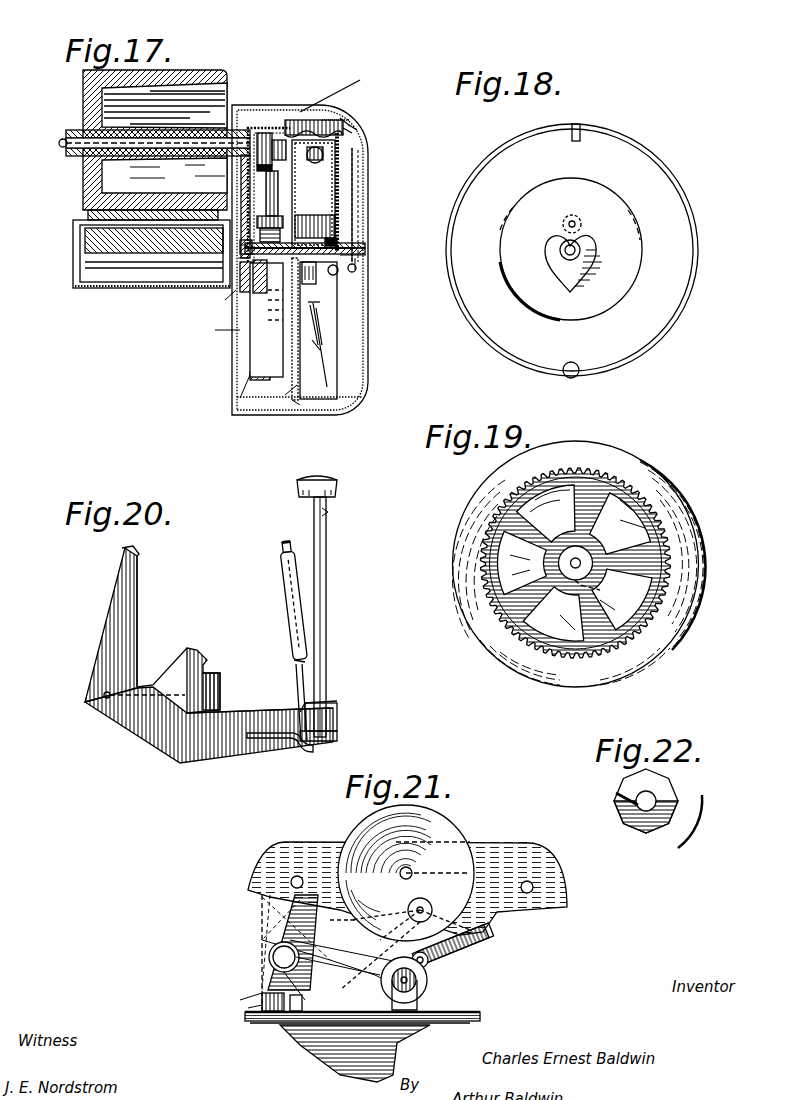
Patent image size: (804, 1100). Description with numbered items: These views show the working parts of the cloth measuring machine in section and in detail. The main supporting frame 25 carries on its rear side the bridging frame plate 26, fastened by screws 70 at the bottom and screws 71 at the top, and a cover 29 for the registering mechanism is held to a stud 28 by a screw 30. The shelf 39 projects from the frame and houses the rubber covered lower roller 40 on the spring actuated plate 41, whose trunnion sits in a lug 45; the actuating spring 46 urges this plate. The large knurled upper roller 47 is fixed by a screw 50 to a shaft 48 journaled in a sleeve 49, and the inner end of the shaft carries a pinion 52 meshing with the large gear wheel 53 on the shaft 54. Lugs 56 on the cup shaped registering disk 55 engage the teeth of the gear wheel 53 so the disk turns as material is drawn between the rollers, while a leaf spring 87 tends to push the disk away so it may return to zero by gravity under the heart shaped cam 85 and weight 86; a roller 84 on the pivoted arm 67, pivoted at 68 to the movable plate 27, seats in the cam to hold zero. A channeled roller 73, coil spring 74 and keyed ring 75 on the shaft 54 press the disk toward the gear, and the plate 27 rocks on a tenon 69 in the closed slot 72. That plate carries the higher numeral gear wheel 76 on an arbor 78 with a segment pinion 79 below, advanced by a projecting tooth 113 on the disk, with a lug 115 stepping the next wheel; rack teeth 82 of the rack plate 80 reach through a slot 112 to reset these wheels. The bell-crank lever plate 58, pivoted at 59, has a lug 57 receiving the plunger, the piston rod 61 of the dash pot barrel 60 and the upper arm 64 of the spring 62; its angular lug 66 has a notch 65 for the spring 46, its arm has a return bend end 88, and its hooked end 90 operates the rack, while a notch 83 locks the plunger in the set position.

In FIG. 17, the main supporting frame 25 is at (232, 373).
In FIG. 21, the main supporting frame 25 is at (567, 886).
In FIG. 17, the frame plate 26 is at (337, 343).
In FIG. 17, the movable frame plate 27 is at (282, 400).
In FIG. 17, the stud 28 is at (358, 278).
In FIG. 17, the cover 29 is at (368, 375).
In FIG. 17, the screw 30 is at (366, 268).
In FIG. 17, the shelf 39 is at (98, 290).
In FIG. 21, the shelf 39 is at (480, 1016).
In FIG. 17, the lower roller 40 is at (88, 215).
In FIG. 21, the lower roller 40 is at (427, 985).
In FIG. 17, the spring actuated plate 41 is at (75, 268).
In FIG. 20, the spring actuated plate 41 is at (140, 685).
In FIG. 21, the spring actuated plate 41 is at (262, 1000).
In FIG. 21, the lug 45 is at (262, 1005).
In FIG. 17, the actuating spring 46 is at (316, 192).
In FIG. 21, the actuating spring 46 is at (270, 957).
In FIG. 17, the large upper roller 47 is at (83, 175).
In FIG. 21, the large upper roller 47 is at (455, 830).
In FIG. 17, the shaft 48 is at (210, 150).
In FIG. 17, the journal sleeve 49 is at (175, 150).
In FIG. 17, the screw 50 is at (70, 140).
In FIG. 17, the pinion 52 is at (251, 128).
In FIG. 20, the pinion 52 is at (326, 600).
In FIG. 17, the large gear wheel 53 is at (225, 288).
In FIG. 19, the large gear wheel 53 is at (515, 495).
In FIG. 17, the shaft 54 is at (355, 249).
In FIG. 19, the shaft 54 is at (580, 566).
In FIG. 17, the registering disk 55 is at (300, 120).
In FIG. 18, the registering disk 55 is at (696, 340).
In FIG. 18, the lugs 56 is at (571, 178).
In FIG. 19, the lugs 56 is at (575, 470).
In FIG. 20, the lug 57 is at (337, 740).
In FIG. 17, the bell-crank lever plate 58 is at (337, 318).
In FIG. 20, the bell-crank lever plate 58 is at (172, 755).
In FIG. 21, the bell-crank lever plate 58 is at (292, 922).
In FIG. 20, the pivot 59 is at (105, 698).
In FIG. 20, the dash pot barrel 60 is at (284, 600).
In FIG. 20, the piston rod 61 is at (298, 688).
In FIG. 17, the spring 62 is at (314, 344).
In FIG. 20, the upper arm 64 is at (295, 752).
In FIG. 20, the notch 65 is at (202, 660).
In FIG. 21, the notch 65 is at (311, 942).
In FIG. 20, the angular lug 66 is at (218, 675).
In FIG. 17, the pivotally mounted arm 67 is at (288, 185).
In FIG. 21, the pivot 68 is at (490, 935).
In FIG. 17, the tenon 69 is at (295, 405).
In FIG. 17, the screws 70 is at (246, 415).
In FIG. 21, the screws 71 is at (302, 886).
In FIG. 17, the closed slot 72 is at (296, 415).
In FIG. 17, the channeled roller 73 is at (312, 268).
In FIG. 17, the coil spring 74 is at (336, 276).
In FIG. 17, the keyed ring 75 is at (355, 244).
In FIG. 17, the higher numeral gear wheel 76 is at (350, 120).
In FIG. 17, the arbors 78 is at (313, 194).
In FIG. 17, the segment pinions 79 is at (352, 160).
In FIG. 17, the toothed rack plate 80 is at (348, 152).
In FIG. 17, the rack teeth 82 is at (372, 150).
In FIG. 20, the notch 83 is at (328, 512).
In FIG. 17, the roller 84 is at (268, 133).
In FIG. 18, the roller 84 is at (582, 222).
In FIG. 21, the roller 84 is at (422, 900).
In FIG. 17, the heart shaped cam 85 is at (240, 300).
In FIG. 18, the heart shaped cam 85 is at (560, 278).
In FIG. 17, the weight 86 is at (250, 378).
In FIG. 18, the weight 86 is at (580, 366).
In FIG. 17, the leaf spring 87 is at (240, 258).
In FIG. 21, the leaf spring 87 is at (430, 962).
In FIG. 22, the leaf spring 87 is at (677, 795).
In FIG. 20, the return bend end 88 is at (337, 705).
In FIG. 20, the hooked end 90 is at (138, 553).
In FIG. 17, the slot 112 is at (355, 130).
In FIG. 17, the projecting tooth 113 is at (337, 89).
In FIG. 18, the projecting tooth 113 is at (572, 140).
In FIG. 17, the lug 115 is at (333, 117).